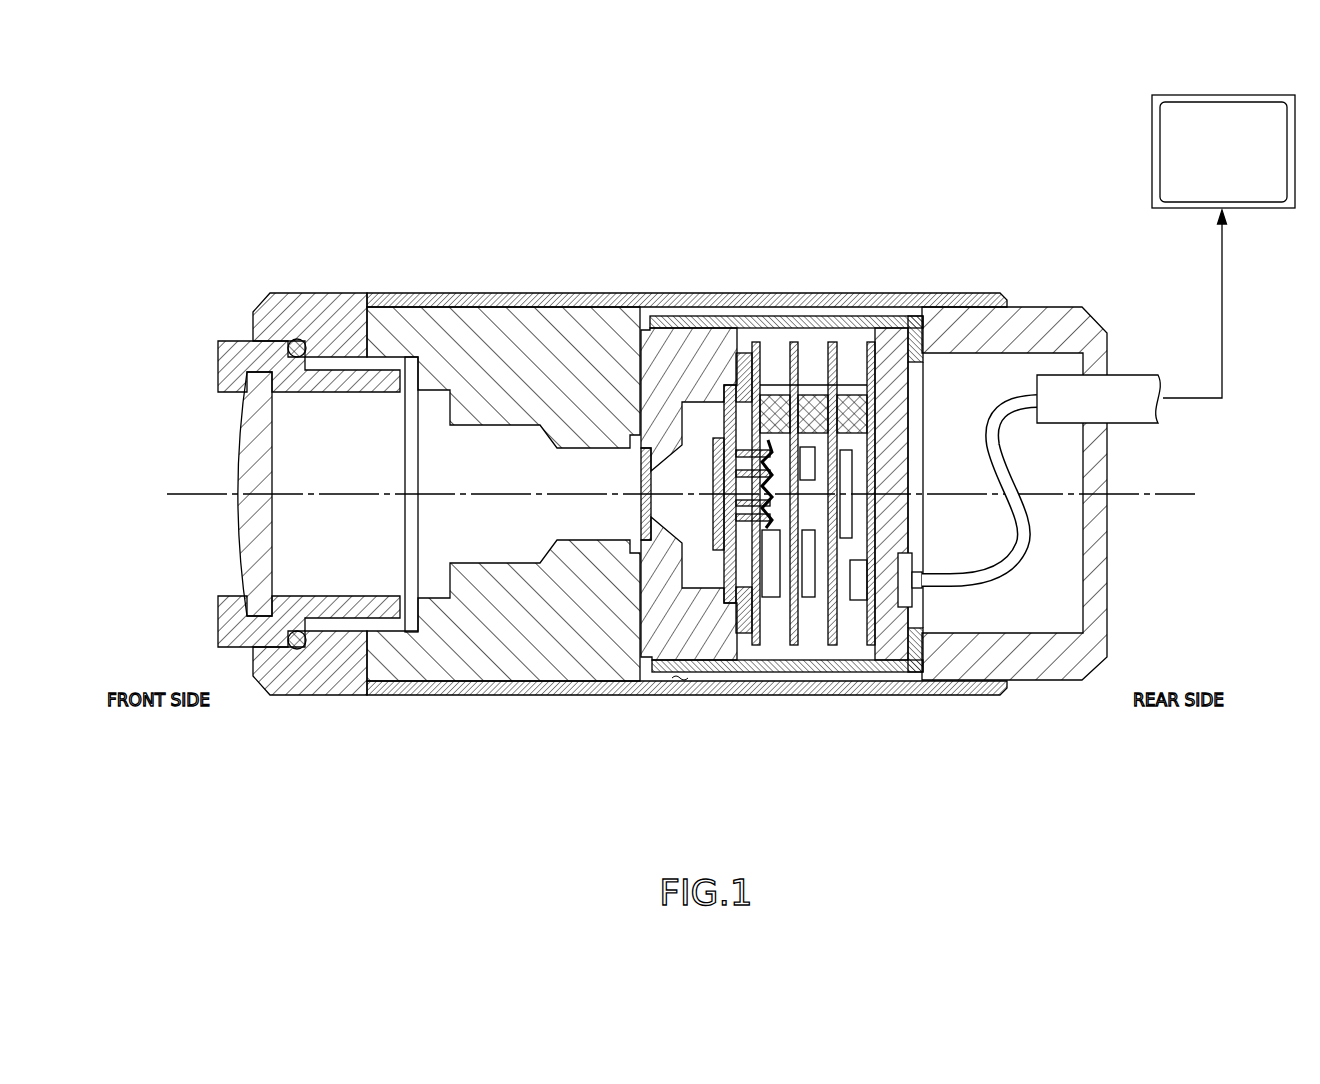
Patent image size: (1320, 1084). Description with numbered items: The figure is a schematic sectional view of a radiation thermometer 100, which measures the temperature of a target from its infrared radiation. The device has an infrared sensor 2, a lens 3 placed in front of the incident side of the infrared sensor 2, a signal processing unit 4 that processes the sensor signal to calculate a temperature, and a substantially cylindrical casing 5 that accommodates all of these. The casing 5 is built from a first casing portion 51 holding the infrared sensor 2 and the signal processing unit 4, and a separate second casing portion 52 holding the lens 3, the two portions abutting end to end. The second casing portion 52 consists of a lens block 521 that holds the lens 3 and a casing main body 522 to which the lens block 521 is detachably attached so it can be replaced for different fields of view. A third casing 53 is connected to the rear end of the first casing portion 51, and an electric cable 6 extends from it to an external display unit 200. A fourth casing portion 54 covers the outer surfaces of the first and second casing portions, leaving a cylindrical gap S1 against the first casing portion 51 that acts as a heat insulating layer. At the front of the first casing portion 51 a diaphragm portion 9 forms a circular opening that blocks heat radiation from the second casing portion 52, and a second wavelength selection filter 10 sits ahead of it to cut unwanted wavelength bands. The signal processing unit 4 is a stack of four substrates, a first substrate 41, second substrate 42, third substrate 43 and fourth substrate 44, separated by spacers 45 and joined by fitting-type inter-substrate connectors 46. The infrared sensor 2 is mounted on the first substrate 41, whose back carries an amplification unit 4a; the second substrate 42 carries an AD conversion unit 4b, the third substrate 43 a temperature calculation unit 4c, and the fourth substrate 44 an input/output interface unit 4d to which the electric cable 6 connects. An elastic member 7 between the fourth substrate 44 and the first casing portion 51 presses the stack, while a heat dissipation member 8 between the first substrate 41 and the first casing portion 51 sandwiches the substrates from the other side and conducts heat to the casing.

The radiation thermometer 100 is at (302, 216).
The casing 5 is at (438, 278).
The first casing portion 51 is at (718, 672).
The second casing portion 52 is at (355, 785).
The lens block 521 is at (333, 625).
The casing main body 522 is at (490, 662).
The third casing 53 is at (1110, 552).
The fourth casing portion 54 is at (558, 682).
The lens 3 is at (240, 443).
The second wavelength selection filter 10 is at (640, 473).
The diaphragm portion 9 is at (645, 332).
The heat dissipation member 8 is at (697, 330).
The infrared sensor 2 is at (713, 550).
The signal processing unit 4 is at (725, 202).
The first substrate 41 is at (755, 327).
The second substrate 42 is at (793, 327).
The third substrate 43 is at (833, 327).
The fourth substrate 44 is at (872, 327).
The spacer 45 is at (862, 363).
The inter-substrate connector 46 is at (860, 407).
The amplification unit 4a is at (765, 597).
The AD conversion unit 4b is at (802, 597).
The temperature calculation unit 4c is at (842, 600).
The input/output interface unit 4d is at (868, 600).
The elastic member 7 is at (900, 508).
The electric cable 6 is at (1128, 375).
The external display unit 200 is at (1152, 152).
The gap S1 is at (678, 680).